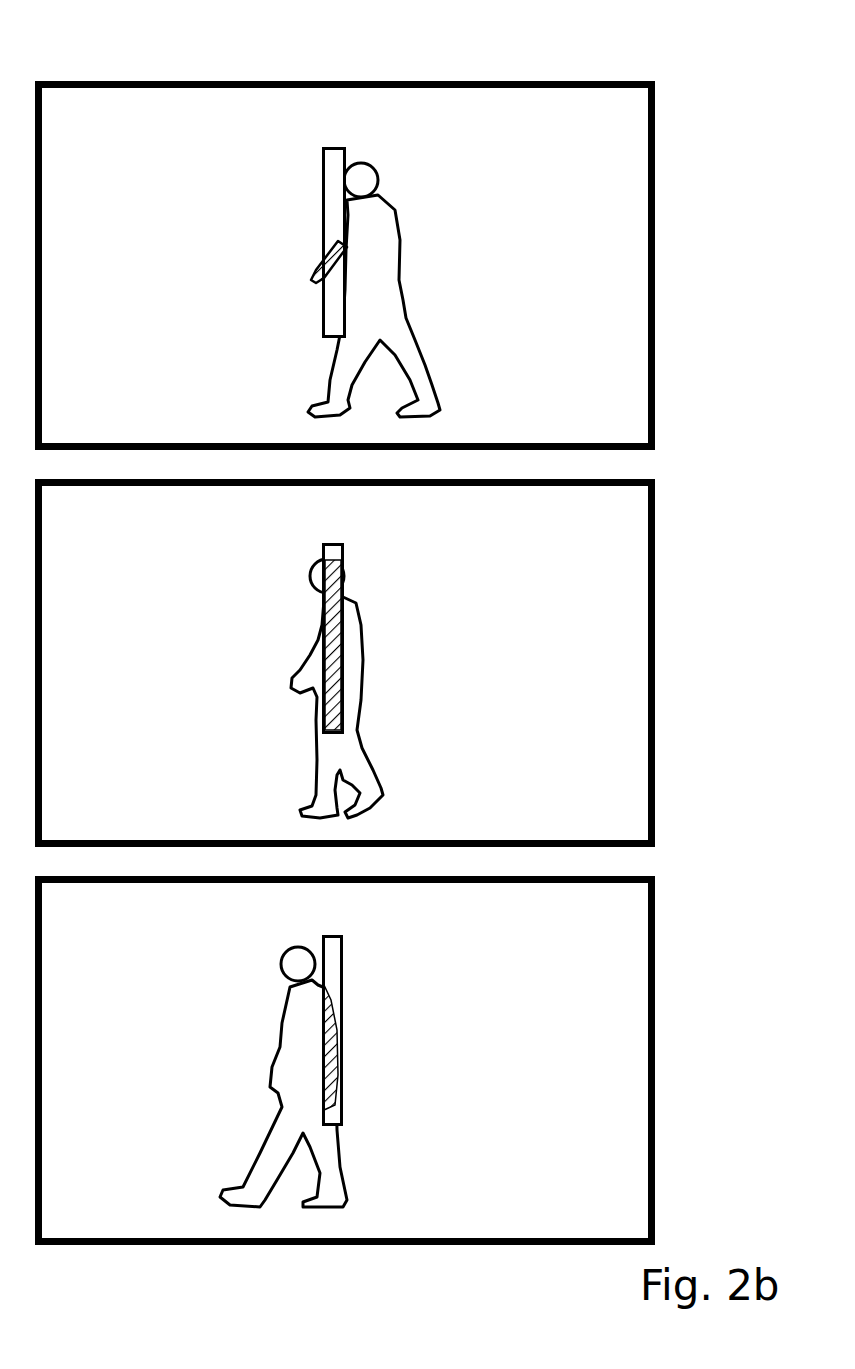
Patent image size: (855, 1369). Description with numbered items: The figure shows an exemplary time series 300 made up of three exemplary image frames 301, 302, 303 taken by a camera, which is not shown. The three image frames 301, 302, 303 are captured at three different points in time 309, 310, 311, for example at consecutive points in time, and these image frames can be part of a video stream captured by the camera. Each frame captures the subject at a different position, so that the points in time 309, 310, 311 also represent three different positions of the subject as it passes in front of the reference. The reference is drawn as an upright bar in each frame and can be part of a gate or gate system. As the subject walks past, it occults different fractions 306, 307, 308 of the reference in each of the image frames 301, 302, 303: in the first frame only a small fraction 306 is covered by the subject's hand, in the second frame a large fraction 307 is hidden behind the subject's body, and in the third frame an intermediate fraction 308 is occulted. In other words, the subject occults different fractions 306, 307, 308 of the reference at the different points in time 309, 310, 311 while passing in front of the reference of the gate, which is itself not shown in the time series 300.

The time series 300 is at (236, 40).
The image frame 301 is at (625, 307).
The image frame 302 is at (625, 705).
The image frame 303 is at (625, 1113).
The fraction of the reference 306 is at (318, 260).
The fraction of the reference 307 is at (318, 640).
The fraction of the reference 308 is at (340, 1030).
The point in time 309 is at (628, 180).
The point in time 310 is at (628, 578).
The point in time 311 is at (628, 988).